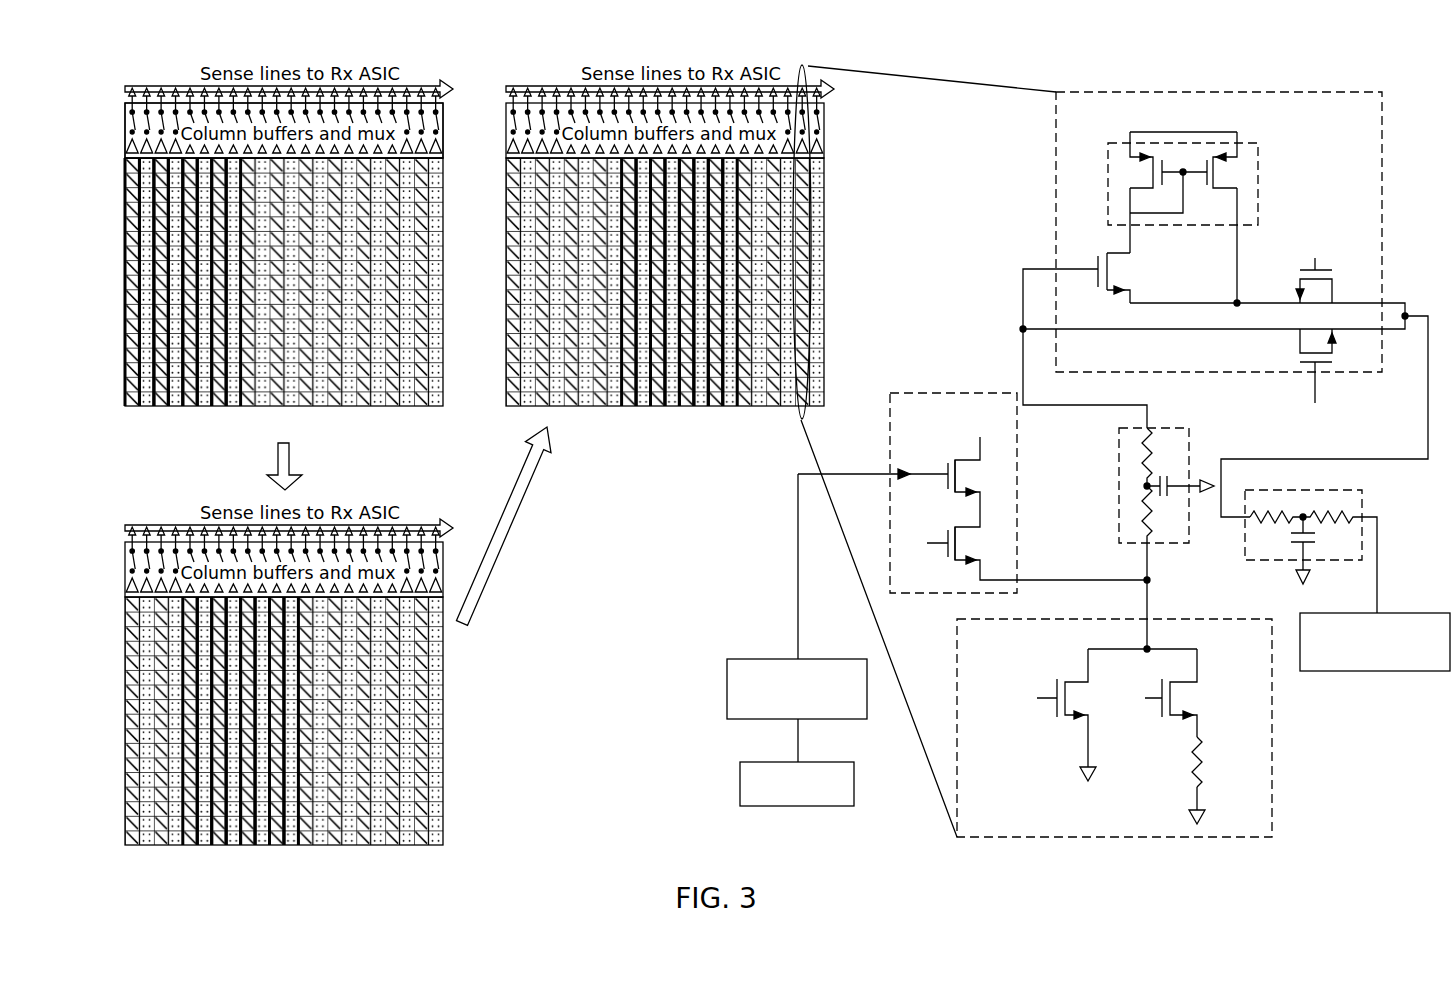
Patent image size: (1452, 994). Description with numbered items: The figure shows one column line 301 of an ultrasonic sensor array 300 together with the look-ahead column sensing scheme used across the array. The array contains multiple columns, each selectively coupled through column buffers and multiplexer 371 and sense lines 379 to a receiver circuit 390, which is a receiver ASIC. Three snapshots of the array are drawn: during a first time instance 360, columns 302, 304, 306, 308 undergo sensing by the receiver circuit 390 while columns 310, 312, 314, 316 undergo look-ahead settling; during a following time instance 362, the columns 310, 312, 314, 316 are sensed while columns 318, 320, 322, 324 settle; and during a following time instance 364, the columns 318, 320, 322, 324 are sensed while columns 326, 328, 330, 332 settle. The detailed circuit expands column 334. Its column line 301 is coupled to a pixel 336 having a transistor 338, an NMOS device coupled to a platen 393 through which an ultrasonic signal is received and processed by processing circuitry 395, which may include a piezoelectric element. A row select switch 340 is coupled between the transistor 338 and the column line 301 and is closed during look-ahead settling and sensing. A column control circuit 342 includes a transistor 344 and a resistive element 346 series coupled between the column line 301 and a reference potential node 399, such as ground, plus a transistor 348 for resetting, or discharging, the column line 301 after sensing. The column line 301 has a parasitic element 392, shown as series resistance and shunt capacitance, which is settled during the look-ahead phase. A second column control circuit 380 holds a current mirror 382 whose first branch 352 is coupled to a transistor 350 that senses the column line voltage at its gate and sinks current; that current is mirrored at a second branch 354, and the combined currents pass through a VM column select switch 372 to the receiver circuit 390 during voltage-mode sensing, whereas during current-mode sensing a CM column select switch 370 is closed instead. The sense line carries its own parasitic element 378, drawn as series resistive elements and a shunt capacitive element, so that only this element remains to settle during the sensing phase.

The ultrasonic sensor array 300 is at (765, 475).
The column line 301 is at (1040, 266).
The column 302 is at (132, 407).
The column 304 is at (147, 407).
The column 306 is at (161, 407).
The column 308 is at (178, 407).
The column 310 is at (190, 407).
The column 312 is at (205, 407).
The column 314 is at (238, 424).
The column 316 is at (234, 407).
The column 318 is at (629, 407).
The column 320 is at (643, 407).
The column 322 is at (658, 407).
The column 324 is at (688, 424).
The column 326 is at (687, 407).
The column 328 is at (701, 407).
The column 330 is at (735, 424).
The column 332 is at (730, 407).
The column 334 is at (812, 412).
The pixel 336 is at (972, 478).
The transistor 338 is at (960, 494).
The switch 340 is at (963, 561).
The column control circuit 342 is at (1114, 745).
The transistor 344 is at (1190, 680).
The resistive element 346 is at (1205, 755).
The transistor 348 is at (1082, 680).
The transistor 350 is at (1118, 288).
The first branch 352 is at (1132, 247).
The second branch 354 is at (1236, 278).
The first time instance 360 is at (269, 220).
The time instance 362 is at (172, 511).
The time instance 364 is at (552, 72).
The CM column select switch 370 is at (1299, 347).
The column buffers and multiplexer 371 is at (117, 126).
The VM column select switch 372 is at (1299, 290).
The parasitic element 378 is at (1272, 562).
The sense lines 379 is at (406, 85).
The column control circuit 380 is at (1208, 288).
The current mirror 382 is at (1260, 165).
The receiver circuit 390 is at (1390, 672).
The parasitic element 392 is at (1165, 428).
The platen 393 is at (775, 762).
The processing circuitry 395 is at (768, 659).
The reference potential node 399 is at (1195, 802).